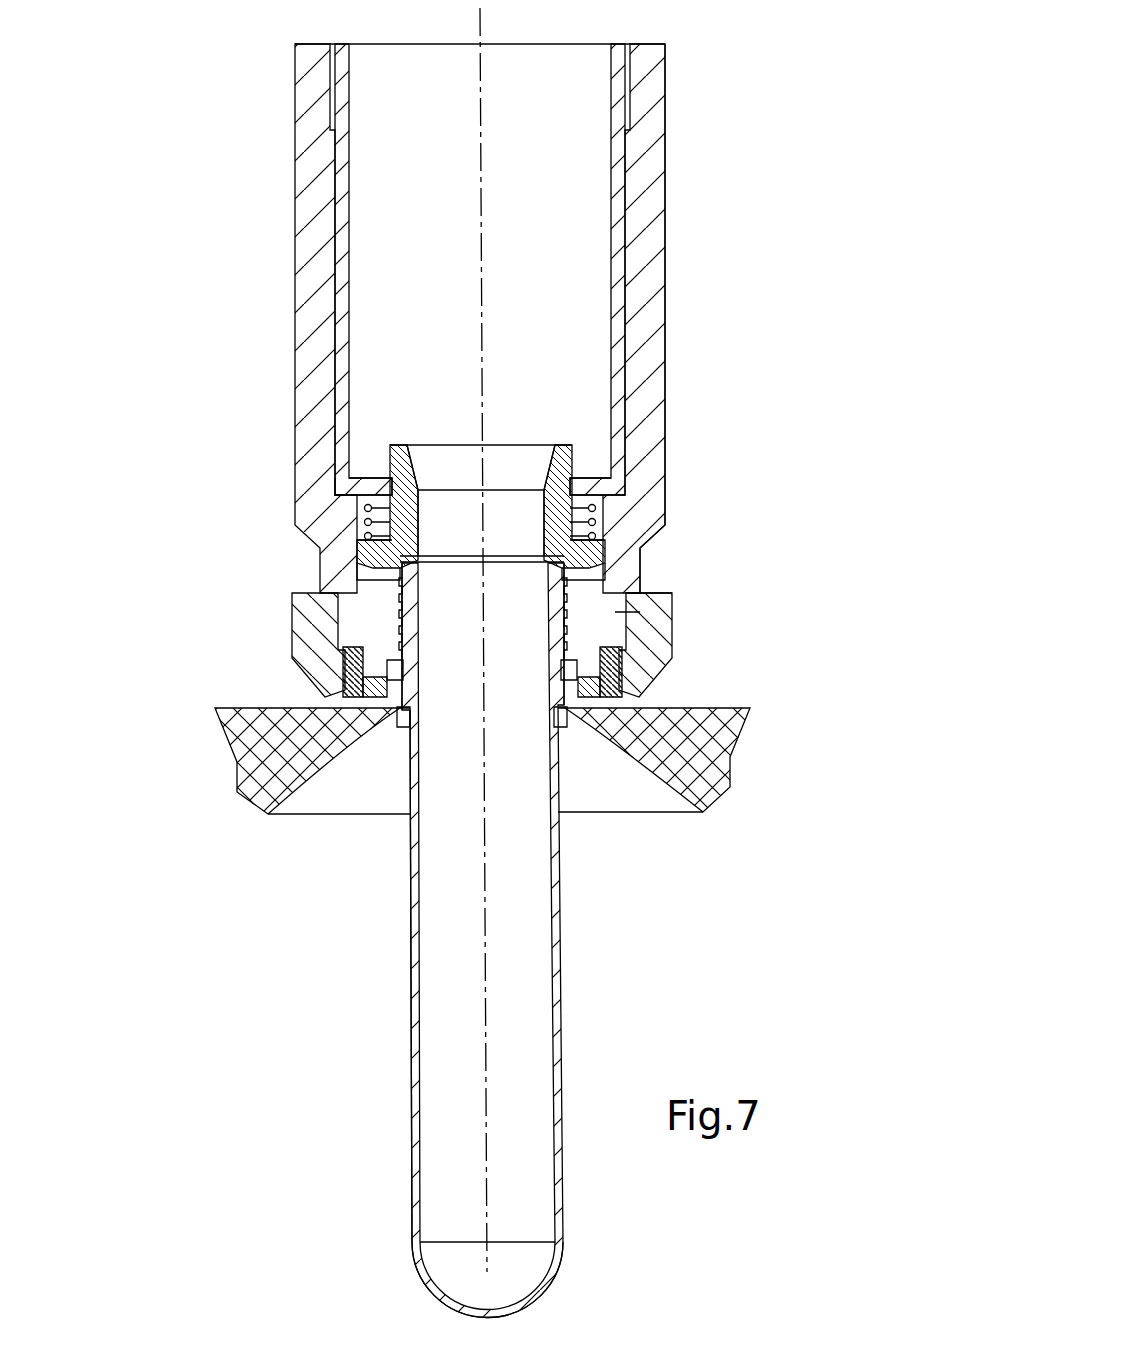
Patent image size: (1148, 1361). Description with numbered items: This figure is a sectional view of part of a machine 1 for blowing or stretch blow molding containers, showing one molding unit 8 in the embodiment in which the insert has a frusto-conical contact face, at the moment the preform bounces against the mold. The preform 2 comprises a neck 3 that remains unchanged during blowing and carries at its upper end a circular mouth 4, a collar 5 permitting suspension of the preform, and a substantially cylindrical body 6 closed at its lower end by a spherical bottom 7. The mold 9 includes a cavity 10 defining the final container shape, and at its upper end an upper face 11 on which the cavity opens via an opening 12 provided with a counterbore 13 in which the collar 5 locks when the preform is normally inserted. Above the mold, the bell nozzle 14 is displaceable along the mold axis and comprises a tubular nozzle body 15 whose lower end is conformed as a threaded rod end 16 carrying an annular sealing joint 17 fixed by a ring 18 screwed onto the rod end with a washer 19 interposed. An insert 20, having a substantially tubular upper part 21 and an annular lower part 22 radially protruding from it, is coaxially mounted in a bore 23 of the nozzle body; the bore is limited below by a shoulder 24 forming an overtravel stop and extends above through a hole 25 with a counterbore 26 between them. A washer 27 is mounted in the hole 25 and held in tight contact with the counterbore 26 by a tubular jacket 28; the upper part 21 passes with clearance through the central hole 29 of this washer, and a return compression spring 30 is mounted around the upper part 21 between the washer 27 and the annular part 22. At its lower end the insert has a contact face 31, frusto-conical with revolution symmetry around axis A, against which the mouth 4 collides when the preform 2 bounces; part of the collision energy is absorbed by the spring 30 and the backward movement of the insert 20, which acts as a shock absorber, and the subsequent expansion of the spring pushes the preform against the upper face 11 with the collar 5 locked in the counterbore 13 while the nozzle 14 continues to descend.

The machine 1 is at (563, 76).
The molding unit 8 is at (727, 112).
The preform 2 is at (568, 936).
The neck 3 is at (395, 619).
The mouth 4 is at (424, 553).
The collar 5 is at (400, 677).
The tube wall 6 is at (411, 917).
The spherical bottom 7 is at (436, 1291).
The mold 9 is at (728, 727).
The cavity 10 is at (327, 793).
The upper face 11 is at (240, 708).
The opening 12 is at (407, 733).
The counterbore 13 is at (407, 703).
The bell nozzle 14 is at (675, 272).
The nozzle body 15 is at (667, 190).
The threaded rod end 16 is at (657, 612).
The annular sealing joint 17 is at (343, 695).
The ring 18 is at (673, 631).
The washer 19 is at (583, 721).
The insert 20 is at (568, 444).
The tubular upper part 21 is at (413, 503).
The annular lower part 22 is at (362, 551).
The bore 23 is at (368, 478).
The shoulder 24 is at (617, 534).
The hole 25 is at (353, 189).
The counterbore 26 is at (350, 468).
The washer 27 is at (613, 490).
The tubular jacket 28 is at (612, 228).
The central hole 29 is at (408, 462).
The return compression spring 30 is at (600, 515).
The contact face 31 is at (417, 572).
The axis A is at (479, 21).